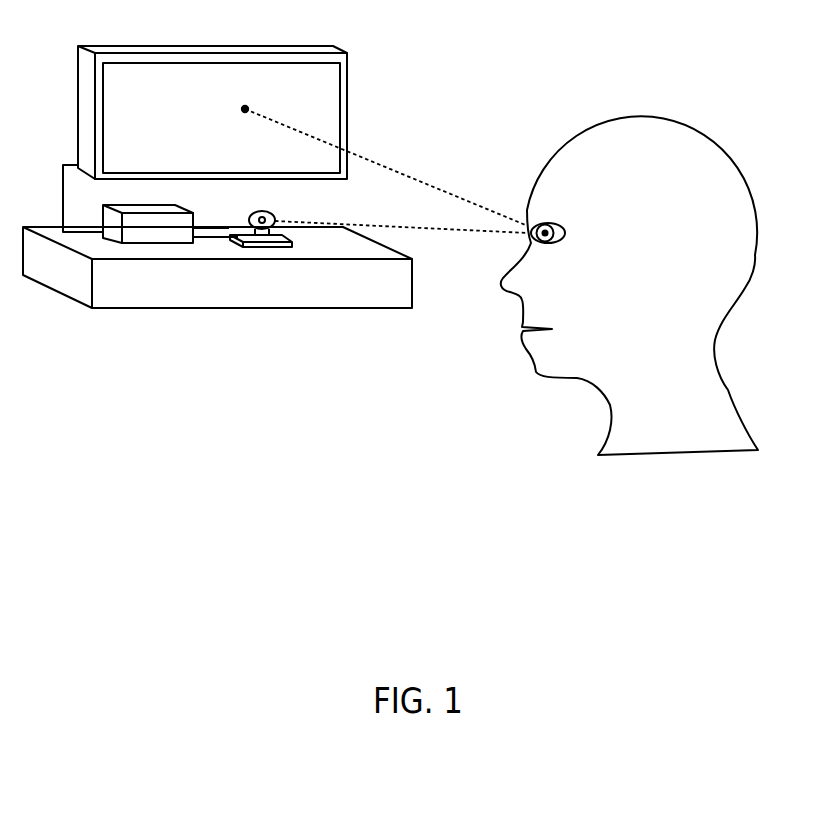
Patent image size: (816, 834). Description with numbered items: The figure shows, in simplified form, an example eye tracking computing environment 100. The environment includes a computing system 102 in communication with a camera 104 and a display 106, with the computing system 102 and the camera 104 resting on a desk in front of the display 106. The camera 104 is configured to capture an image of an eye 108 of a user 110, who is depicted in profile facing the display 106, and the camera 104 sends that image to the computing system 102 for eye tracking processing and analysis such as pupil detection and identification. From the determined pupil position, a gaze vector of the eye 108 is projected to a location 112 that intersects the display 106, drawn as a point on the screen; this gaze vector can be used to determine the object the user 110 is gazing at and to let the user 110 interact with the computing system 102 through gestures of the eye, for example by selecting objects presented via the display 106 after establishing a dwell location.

The eye tracking computing environment 100 is at (602, 37).
The computing system 102 is at (155, 210).
The camera 104 is at (260, 212).
The display 106 is at (258, 45).
The eye 108 is at (553, 224).
The user 110 is at (641, 120).
The location 112 is at (245, 108).